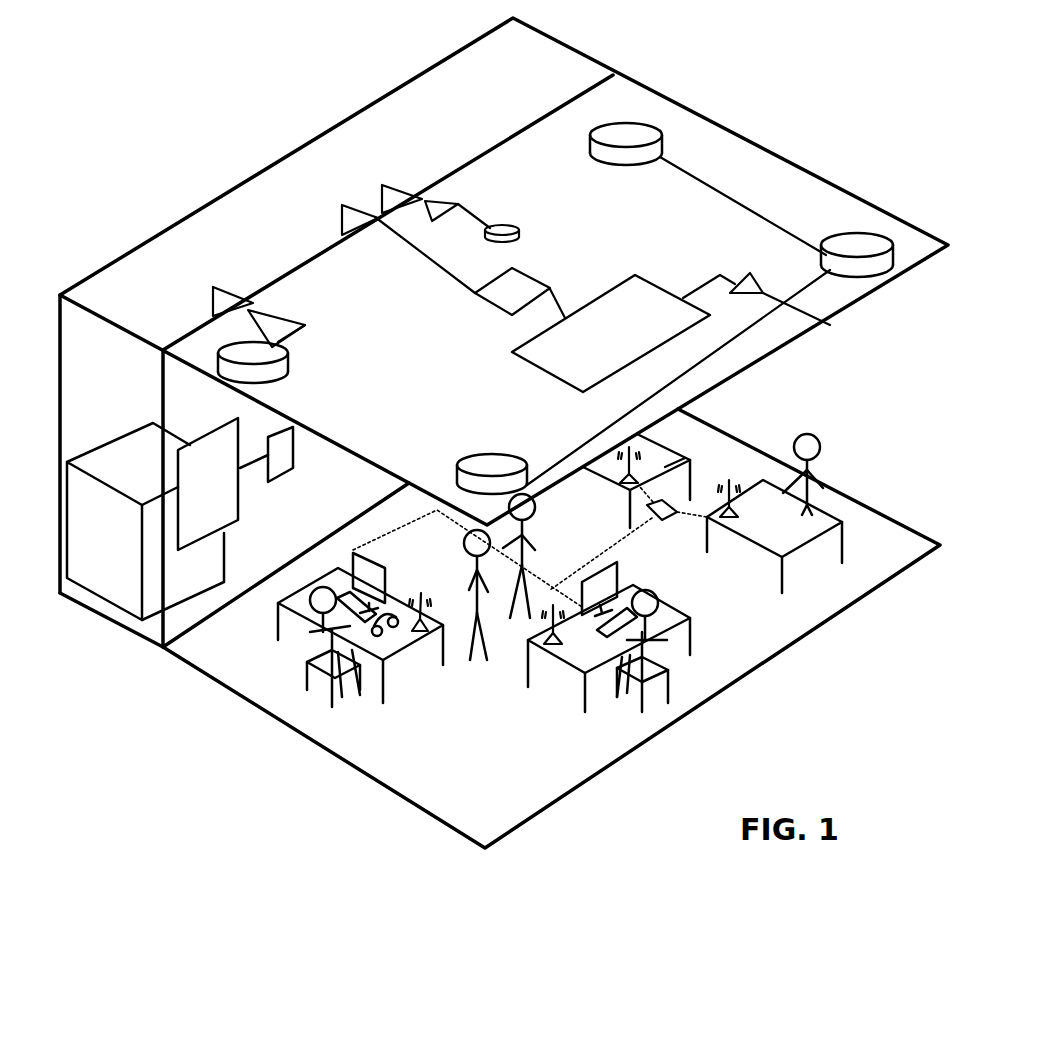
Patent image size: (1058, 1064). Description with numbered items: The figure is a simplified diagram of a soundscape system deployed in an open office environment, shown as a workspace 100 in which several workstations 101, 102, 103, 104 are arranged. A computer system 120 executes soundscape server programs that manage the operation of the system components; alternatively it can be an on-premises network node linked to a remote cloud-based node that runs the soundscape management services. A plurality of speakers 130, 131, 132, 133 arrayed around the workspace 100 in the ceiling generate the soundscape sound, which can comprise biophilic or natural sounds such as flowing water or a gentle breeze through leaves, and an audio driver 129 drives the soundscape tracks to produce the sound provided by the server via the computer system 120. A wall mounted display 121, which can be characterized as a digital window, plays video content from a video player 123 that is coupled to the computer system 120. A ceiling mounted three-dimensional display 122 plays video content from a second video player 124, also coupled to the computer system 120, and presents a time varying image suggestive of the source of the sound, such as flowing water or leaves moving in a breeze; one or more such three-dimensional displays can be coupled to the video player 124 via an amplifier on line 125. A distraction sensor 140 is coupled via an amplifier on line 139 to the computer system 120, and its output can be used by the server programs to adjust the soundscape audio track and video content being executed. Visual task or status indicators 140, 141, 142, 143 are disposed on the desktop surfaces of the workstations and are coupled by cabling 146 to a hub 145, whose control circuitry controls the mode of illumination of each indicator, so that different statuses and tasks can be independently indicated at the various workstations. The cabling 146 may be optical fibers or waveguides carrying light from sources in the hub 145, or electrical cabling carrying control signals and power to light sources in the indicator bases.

The workspace 100 is at (808, 385).
The workstation 101 is at (805, 532).
The workstation 102 is at (662, 647).
The workstation 103 is at (305, 665).
The workstation 104 is at (687, 452).
The computer system 120 is at (108, 573).
The wall mounted display 121 is at (198, 507).
The ceiling mounted 3D display 122 is at (612, 297).
The video player 123 is at (282, 458).
The video player 124 is at (530, 288).
The line 125 is at (838, 320).
The audio driver 129 is at (253, 307).
The speaker 130 is at (225, 345).
The speaker 131 is at (488, 473).
The speaker 132 is at (865, 248).
The speaker 133 is at (632, 142).
The line 139 is at (383, 183).
The distraction sensor 140 is at (495, 228).
The visual task or status indicator 141 is at (732, 518).
The visual task or status indicator 142 is at (530, 647).
The visual task or status indicator 143 is at (427, 620).
The hub 145 is at (615, 547).
The cabling 146 is at (662, 517).